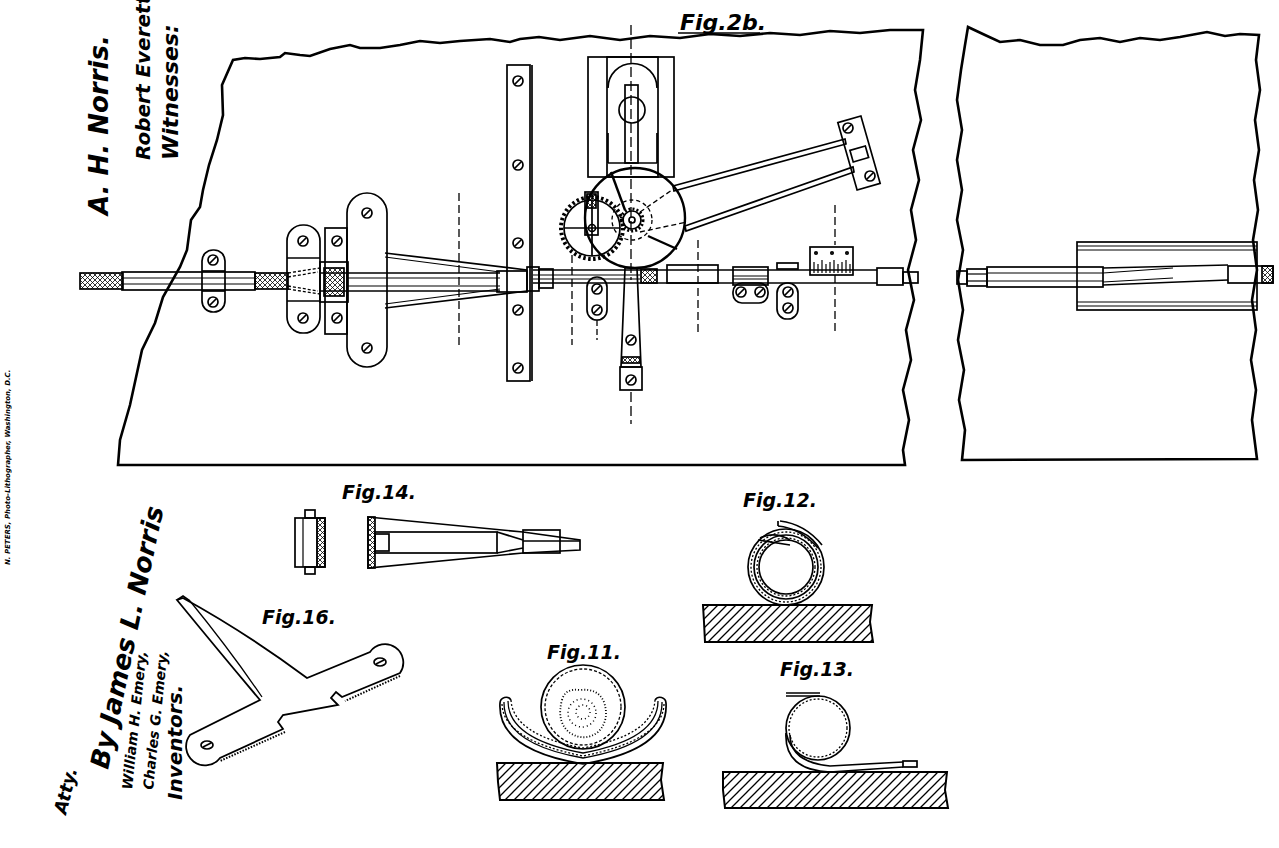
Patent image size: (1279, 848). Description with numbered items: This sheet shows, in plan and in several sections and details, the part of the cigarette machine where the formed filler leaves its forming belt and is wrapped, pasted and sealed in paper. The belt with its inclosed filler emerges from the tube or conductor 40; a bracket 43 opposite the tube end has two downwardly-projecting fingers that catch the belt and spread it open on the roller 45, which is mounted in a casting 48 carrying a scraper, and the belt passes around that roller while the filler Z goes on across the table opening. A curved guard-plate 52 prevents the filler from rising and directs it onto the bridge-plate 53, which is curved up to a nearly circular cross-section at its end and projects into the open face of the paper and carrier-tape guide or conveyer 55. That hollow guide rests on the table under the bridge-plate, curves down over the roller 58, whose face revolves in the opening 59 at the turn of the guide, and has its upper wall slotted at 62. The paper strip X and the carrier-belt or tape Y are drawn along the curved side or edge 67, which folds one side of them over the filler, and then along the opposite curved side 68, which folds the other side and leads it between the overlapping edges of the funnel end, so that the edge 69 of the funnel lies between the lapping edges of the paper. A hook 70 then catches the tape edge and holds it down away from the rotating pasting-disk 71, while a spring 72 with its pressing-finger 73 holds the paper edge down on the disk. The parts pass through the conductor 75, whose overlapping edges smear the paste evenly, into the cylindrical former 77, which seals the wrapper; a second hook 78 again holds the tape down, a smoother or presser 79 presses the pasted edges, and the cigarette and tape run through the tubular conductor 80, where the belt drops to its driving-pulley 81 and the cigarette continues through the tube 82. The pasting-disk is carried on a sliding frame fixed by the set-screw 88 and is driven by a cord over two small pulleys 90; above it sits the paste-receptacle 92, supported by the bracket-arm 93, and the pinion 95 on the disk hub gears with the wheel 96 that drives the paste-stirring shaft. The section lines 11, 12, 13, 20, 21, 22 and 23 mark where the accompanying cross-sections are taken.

In FIG. 2B, the section line 11 is at (459, 269).
In FIG. 2B, the section line 12 is at (572, 262).
In FIG. 2B, the section line 13 is at (598, 339).
In FIG. 2B, the section line 20 is at (631, 224).
In FIG. 2B, the section line 21 is at (105, 263).
In FIG. 2B, the section line 22 is at (698, 290).
In FIG. 2B, the section line 23 is at (834, 271).
In FIG. 2B, the tube or conductor 40 is at (239, 272).
In FIG. 2B, the bracket 43 is at (303, 279).
In FIG. 2B, the roller 45 is at (330, 303).
In FIG. 2B, the casting 48 is at (330, 232).
In FIG. 2B, the curved guard-plate 52 is at (423, 281).
In FIG. 11, the curved guard-plate 52 is at (585, 707).
In FIG. 2B, the bridge-plate 53 is at (367, 280).
In FIG. 16, the bridge-plate 53 is at (290, 680).
In FIG. 11, the bridge-plate 53 is at (645, 715).
In FIG. 2B, the paper and carrier-tape guide or conveyer 55 is at (443, 300).
In FIG. 14, the paper and carrier-tape guide or conveyer 55 is at (474, 536).
In FIG. 11, the paper and carrier-tape guide or conveyer 55 is at (665, 726).
In FIG. 12, the paper and carrier-tape guide or conveyer 55 is at (822, 585).
In FIG. 14, the roller 58 is at (321, 542).
In FIG. 14, the opening 59 is at (382, 545).
In FIG. 14, the slot 62 is at (449, 542).
In FIG. 11, the curved side or edge 67 is at (500, 707).
In FIG. 2B, the opposite curved side 68 is at (558, 282).
In FIG. 14, the opposite curved side 68 is at (551, 547).
In FIG. 12, the opposite curved side 68 is at (786, 555).
In FIG. 2B, the edge of the funnel 69 is at (537, 277).
In FIG. 14, the edge of the funnel 69 is at (541, 541).
In FIG. 12, the edge of the funnel 69 is at (760, 541).
In FIG. 2B, the hook 70 is at (615, 295).
In FIG. 13, the hook 70 is at (786, 742).
In FIG. 2B, the pasting-disk 71 is at (636, 218).
In FIG. 2B, the spring 72 is at (640, 341).
In FIG. 2B, the pressing-finger 73 is at (646, 288).
In FIG. 2B, the conductor 75 is at (690, 285).
In FIG. 2B, the cylindrical former 77 is at (750, 272).
In FIG. 2B, the hook 78 is at (789, 264).
In FIG. 2B, the smoother or presser 79 is at (855, 260).
In FIG. 2B, the tubular conductor 80 is at (894, 286).
In FIG. 2B, the driving-pulley 81 is at (1136, 307).
In FIG. 2B, the tube 82 is at (1241, 284).
In FIG. 2B, the set-screw 88 is at (622, 112).
In FIG. 2B, the small pulleys 90 is at (870, 147).
In FIG. 2B, the paste-receptacle 92 is at (597, 206).
In FIG. 2B, the bracket-arm 93 is at (648, 165).
In FIG. 2B, the pinion 95 is at (641, 221).
In FIG. 2B, the wheel 96 is at (563, 228).
In FIG. 2B, the paper strip X is at (958, 277).
In FIG. 11, the paper strip X is at (514, 728).
In FIG. 12, the paper strip X is at (760, 560).
In FIG. 13, the paper strip X is at (800, 696).
In FIG. 2B, the paper carrier-belt or tape Y is at (972, 287).
In FIG. 11, the paper carrier-belt or tape Y is at (648, 738).
In FIG. 12, the paper carrier-belt or tape Y is at (822, 568).
In FIG. 13, the paper carrier-belt or tape Y is at (850, 733).
In FIG. 11, the filler Z is at (575, 708).